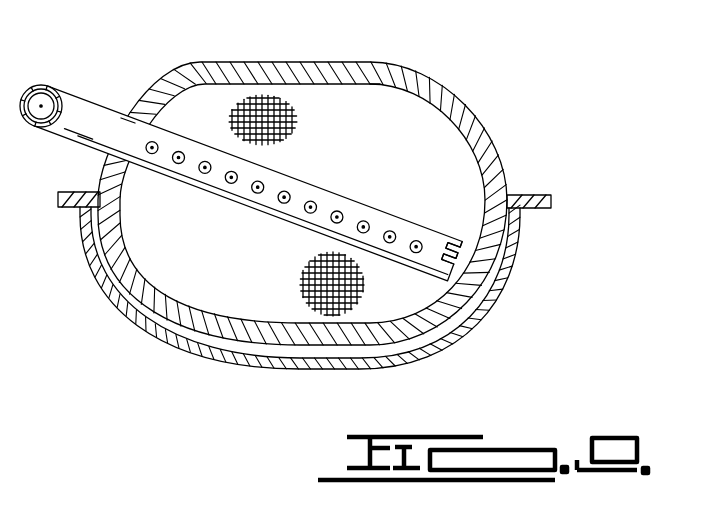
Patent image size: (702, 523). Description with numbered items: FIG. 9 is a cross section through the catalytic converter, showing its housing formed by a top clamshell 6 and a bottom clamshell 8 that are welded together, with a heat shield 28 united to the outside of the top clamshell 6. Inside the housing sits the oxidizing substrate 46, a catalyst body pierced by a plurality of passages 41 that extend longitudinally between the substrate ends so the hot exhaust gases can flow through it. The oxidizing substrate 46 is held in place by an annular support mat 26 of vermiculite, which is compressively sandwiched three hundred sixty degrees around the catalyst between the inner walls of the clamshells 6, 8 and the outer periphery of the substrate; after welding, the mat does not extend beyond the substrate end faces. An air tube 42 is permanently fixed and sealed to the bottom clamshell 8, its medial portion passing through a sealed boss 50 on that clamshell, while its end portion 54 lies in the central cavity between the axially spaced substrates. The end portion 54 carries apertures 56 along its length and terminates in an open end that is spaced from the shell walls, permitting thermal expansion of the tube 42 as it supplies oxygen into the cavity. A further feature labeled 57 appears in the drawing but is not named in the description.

The top clamshell 6 is at (468, 100).
The bottom clamshell 8 is at (520, 265).
The annular support mat 26 is at (480, 125).
The heat shield 28 is at (500, 317).
The passages 41 is at (274, 108).
The air tube 42 is at (73, 103).
The oxidizing substrate 46 is at (359, 117).
The sealed boss 50 is at (126, 112).
The end portion 54 is at (432, 242).
The apertures 56 is at (282, 200).
The tube holes 57 is at (165, 162).